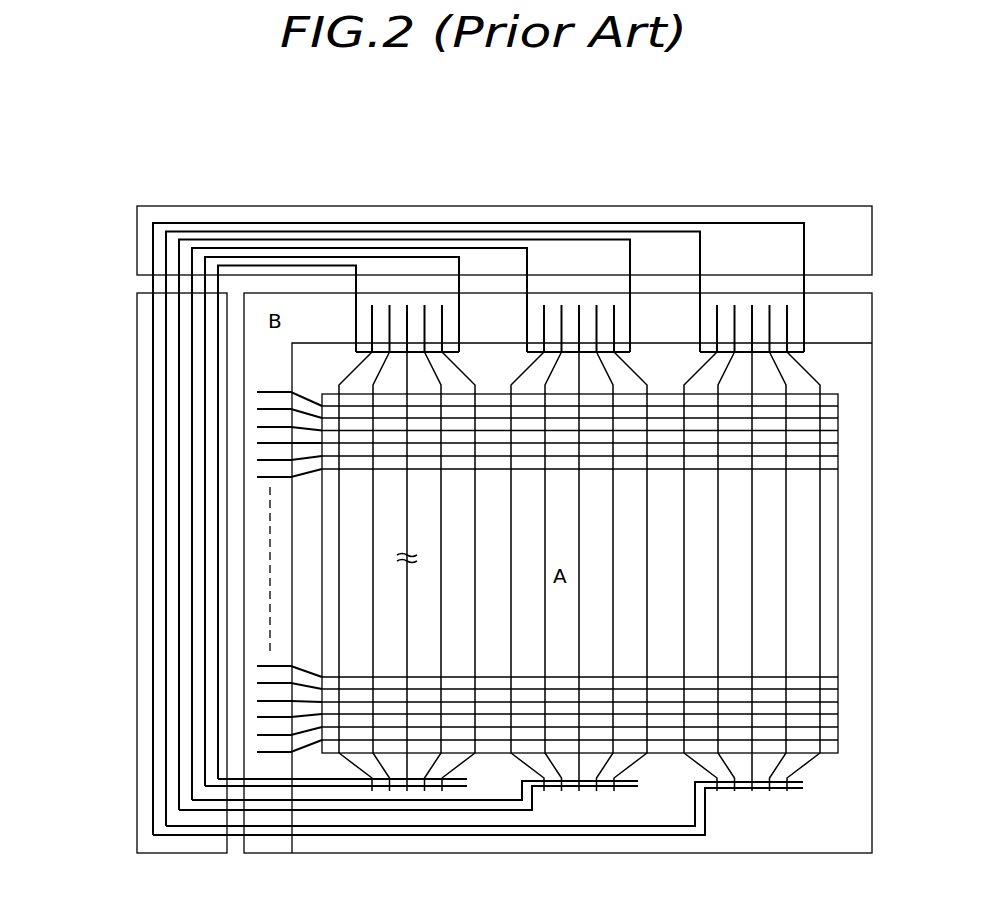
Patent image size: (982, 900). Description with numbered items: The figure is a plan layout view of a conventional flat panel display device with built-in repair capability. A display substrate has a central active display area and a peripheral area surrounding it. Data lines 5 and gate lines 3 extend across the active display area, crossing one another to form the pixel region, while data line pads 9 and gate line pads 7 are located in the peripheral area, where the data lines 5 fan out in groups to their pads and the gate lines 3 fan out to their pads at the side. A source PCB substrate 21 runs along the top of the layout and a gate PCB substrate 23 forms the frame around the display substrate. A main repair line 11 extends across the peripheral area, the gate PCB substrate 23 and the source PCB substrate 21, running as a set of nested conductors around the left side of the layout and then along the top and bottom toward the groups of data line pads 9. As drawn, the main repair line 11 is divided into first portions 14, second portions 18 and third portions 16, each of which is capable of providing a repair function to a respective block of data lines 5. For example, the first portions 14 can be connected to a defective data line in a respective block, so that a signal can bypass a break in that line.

The source PCB substrate 21 is at (313, 200).
The gate PCB substrate 23 is at (126, 362).
The data line pads 9 is at (788, 324).
The data lines 5 is at (787, 589).
The first portions 14 is at (372, 357).
The gate line pads 7 is at (262, 683).
The gate lines 3 is at (425, 469).
The third portions 16 is at (167, 577).
The second portions 18 is at (180, 787).
The main repair line 11 is at (72, 468).